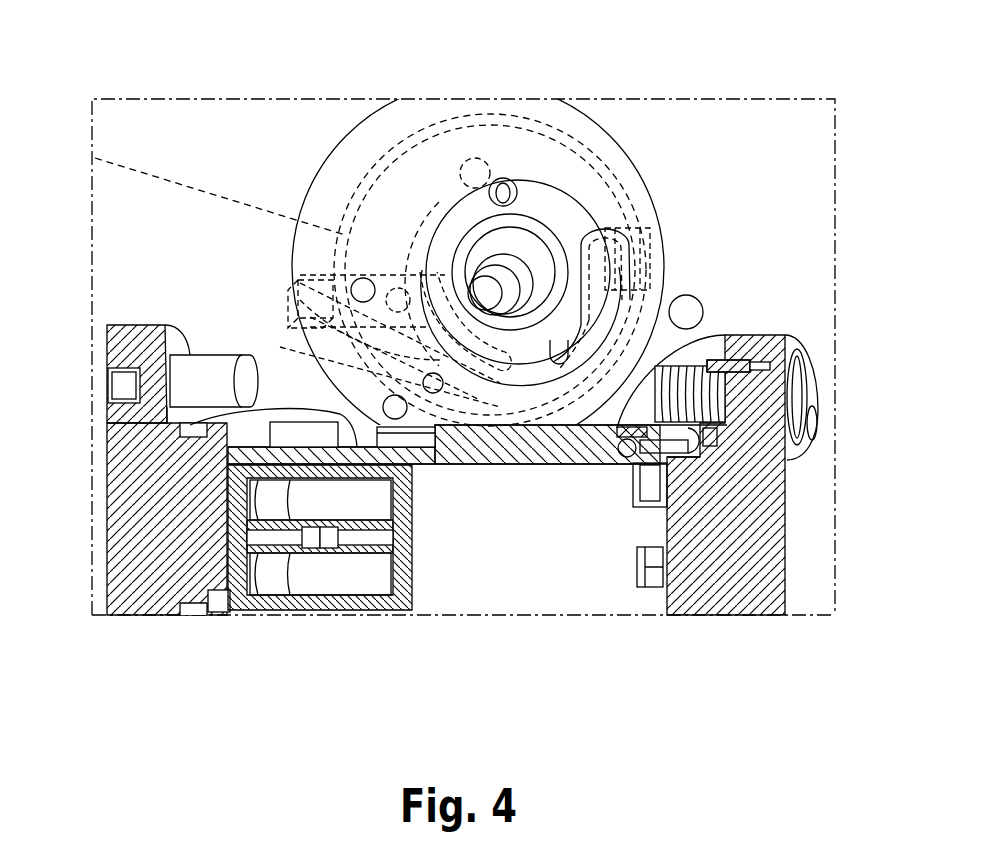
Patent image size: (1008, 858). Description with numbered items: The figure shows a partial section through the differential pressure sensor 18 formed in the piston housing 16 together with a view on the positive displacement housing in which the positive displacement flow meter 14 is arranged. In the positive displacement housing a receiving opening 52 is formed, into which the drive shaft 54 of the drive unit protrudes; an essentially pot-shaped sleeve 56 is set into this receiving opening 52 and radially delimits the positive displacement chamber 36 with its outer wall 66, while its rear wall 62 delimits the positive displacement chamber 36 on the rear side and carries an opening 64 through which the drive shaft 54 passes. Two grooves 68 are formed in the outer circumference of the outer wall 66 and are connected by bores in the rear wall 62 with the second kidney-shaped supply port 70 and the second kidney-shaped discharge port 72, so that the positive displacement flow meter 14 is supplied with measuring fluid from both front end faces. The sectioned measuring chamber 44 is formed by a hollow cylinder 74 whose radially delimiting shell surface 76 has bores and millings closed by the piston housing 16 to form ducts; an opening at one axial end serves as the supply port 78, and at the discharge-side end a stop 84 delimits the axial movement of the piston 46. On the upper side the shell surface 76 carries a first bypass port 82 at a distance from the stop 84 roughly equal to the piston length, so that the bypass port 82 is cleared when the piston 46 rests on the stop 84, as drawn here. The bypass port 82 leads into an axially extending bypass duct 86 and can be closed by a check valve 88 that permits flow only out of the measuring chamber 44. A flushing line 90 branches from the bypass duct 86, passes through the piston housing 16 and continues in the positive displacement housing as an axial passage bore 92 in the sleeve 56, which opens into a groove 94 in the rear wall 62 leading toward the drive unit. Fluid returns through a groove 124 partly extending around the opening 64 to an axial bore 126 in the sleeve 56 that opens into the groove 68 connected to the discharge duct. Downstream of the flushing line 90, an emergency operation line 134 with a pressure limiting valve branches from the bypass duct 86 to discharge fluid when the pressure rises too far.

The positive displacement flow meter 14 is at (660, 162).
The piston housing 16 is at (747, 443).
The differential pressure sensor 18 is at (550, 628).
The positive displacement chamber 36 is at (308, 190).
The measuring chamber 44 is at (627, 527).
The piston 46 is at (320, 610).
The receiving opening 52 is at (305, 190).
The drive shaft 54 is at (485, 295).
The sleeve 56 is at (408, 200).
The rear wall 62 is at (432, 172).
The opening 64 is at (532, 228).
The outer wall 66 is at (290, 240).
The grooves 68 is at (300, 297).
The second kidney-shaped supply port 70 is at (660, 223).
The second kidney-shaped discharge port 72 is at (330, 325).
The hollow cylinder 74 is at (705, 318).
The shell surface 76 is at (563, 467).
The supply port 78 is at (650, 573).
The first bypass port 82 is at (425, 467).
The stop 84 is at (225, 545).
The bypass duct 86 is at (225, 518).
The check valve 88 is at (415, 470).
The flushing line 90 is at (190, 425).
The axial passage bore 92 is at (690, 300).
The groove 94 is at (305, 348).
The groove 124 is at (462, 197).
The axial bore 126 is at (188, 187).
The emergency operation line 134 is at (225, 452).